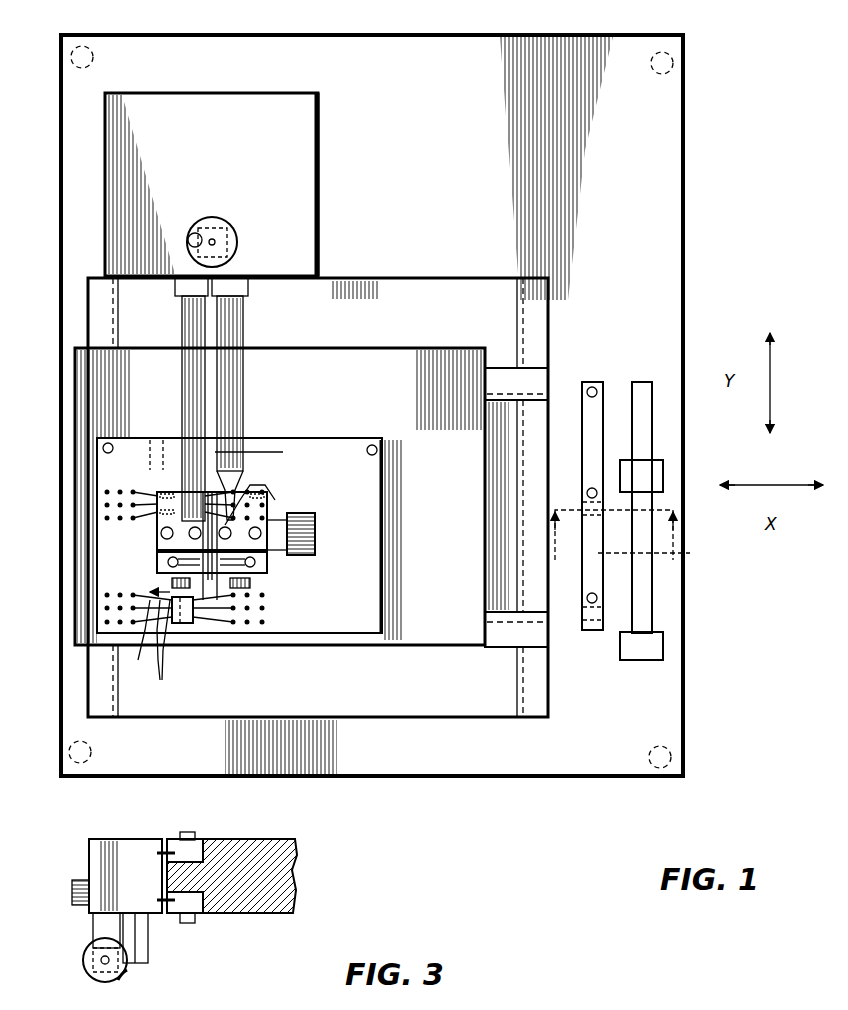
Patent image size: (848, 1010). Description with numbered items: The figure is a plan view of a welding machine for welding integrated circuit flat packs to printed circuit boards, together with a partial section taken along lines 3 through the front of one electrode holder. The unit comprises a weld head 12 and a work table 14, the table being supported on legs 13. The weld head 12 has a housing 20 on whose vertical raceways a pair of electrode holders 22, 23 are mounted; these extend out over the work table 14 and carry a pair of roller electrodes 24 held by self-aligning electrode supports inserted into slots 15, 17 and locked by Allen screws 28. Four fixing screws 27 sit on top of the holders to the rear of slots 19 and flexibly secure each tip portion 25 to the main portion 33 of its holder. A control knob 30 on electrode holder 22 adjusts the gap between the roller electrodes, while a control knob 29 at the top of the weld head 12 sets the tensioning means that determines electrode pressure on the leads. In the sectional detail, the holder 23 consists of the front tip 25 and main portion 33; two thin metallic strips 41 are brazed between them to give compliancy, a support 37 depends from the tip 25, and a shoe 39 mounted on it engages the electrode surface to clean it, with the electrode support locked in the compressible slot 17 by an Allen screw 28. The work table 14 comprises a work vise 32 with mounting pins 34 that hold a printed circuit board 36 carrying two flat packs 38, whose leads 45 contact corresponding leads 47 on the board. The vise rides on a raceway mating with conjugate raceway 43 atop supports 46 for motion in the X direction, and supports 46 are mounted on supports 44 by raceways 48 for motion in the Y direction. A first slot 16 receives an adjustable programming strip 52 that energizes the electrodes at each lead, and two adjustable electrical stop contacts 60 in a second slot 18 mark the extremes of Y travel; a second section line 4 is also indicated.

In FIG. 1, the weld head 12 is at (372, 405).
In FIG. 1, the legs 13 is at (420, 387).
In FIG. 1, the work table 14 is at (438, 768).
In FIG. 1, the slot 15 is at (230, 547).
In FIG. 1, the first slot 16 is at (615, 483).
In FIG. 1, the slot 17 is at (210, 633).
In FIG. 1, the second slot 18 is at (681, 507).
In FIG. 1, the slots 19 is at (167, 512).
In FIG. 1, the housing 20 is at (213, 163).
In FIG. 1, the electrode holder 22 is at (257, 399).
In FIG. 3, the electrode holder 22 is at (70, 930).
In FIG. 1, the electrode holder 23 is at (168, 399).
In FIG. 3, the electrode holder 23 is at (269, 817).
In FIG. 3, the roller electrodes 24 is at (73, 960).
In FIG. 1, the tip portion 25 is at (177, 563).
In FIG. 3, the tip portion 25 is at (115, 857).
In FIG. 1, the fixing screws 27 is at (257, 493).
In FIG. 3, the fixing screws 27 is at (207, 862).
In FIG. 1, the Allen screws 28 is at (167, 596).
In FIG. 3, the Allen screws 28 is at (52, 879).
In FIG. 1, the control knob 29 is at (280, 242).
In FIG. 1, the control knob 30 is at (344, 532).
In FIG. 1, the work vise 32 is at (318, 526).
In FIG. 1, the main portion 33 is at (280, 496).
In FIG. 3, the main portion 33 is at (257, 857).
In FIG. 1, the mounting pins 34 is at (211, 427).
In FIG. 1, the printed circuit board 36 is at (279, 535).
In FIG. 3, the support 37 is at (166, 942).
In FIG. 1, the integrated circuit flat packs 38 is at (142, 569).
In FIG. 3, the shoe 39 is at (150, 982).
In FIG. 3, the thin metallic strips 41 is at (176, 876).
In FIG. 3, the conjugate raceway 43 is at (178, 855).
In FIG. 1, the supports 44 is at (348, 745).
In FIG. 1, the leads 45 is at (161, 651).
In FIG. 1, the supports 46 is at (541, 516).
In FIG. 1, the leads 47 is at (139, 642).
In FIG. 1, the wire-rod raceways 48 is at (317, 727).
In FIG. 1, the programming strip 52 is at (662, 541).
In FIG. 1, the electrical stop contacts 60 is at (688, 550).
In FIG. 1, the section line 3 is at (215, 517).
In FIG. 1, the section line 4 is at (611, 548).